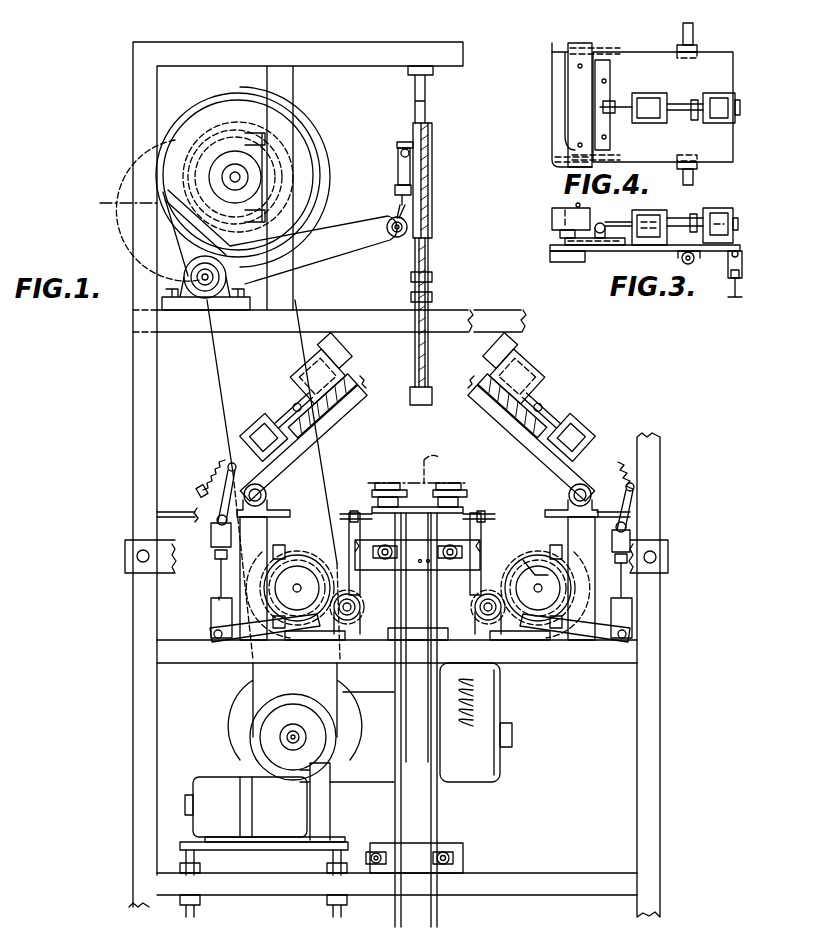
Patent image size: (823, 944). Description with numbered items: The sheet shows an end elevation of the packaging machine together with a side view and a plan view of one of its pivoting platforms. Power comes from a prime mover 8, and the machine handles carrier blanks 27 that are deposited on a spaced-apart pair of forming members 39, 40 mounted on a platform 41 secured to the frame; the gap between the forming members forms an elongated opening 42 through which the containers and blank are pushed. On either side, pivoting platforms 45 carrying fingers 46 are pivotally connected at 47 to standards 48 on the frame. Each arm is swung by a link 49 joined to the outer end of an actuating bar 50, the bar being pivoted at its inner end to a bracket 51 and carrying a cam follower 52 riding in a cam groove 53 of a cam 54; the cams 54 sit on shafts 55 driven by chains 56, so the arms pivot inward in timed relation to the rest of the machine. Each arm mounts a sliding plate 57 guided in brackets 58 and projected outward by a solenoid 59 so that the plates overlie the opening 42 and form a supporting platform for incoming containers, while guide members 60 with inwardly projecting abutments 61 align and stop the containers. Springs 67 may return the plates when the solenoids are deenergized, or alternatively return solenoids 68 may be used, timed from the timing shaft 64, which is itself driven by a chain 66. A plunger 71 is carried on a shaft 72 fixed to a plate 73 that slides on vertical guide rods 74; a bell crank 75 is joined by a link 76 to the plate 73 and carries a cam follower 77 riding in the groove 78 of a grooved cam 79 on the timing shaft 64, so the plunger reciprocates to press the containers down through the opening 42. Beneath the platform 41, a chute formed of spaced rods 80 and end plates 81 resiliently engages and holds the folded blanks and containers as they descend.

In FIG. 1, the prime mover 8 is at (216, 780).
In FIG. 1, the carrier blank 27 is at (434, 462).
In FIG. 1, the forming member 39 is at (372, 488).
In FIG. 1, the forming member 40 is at (472, 484).
In FIG. 1, the platform 41 is at (470, 506).
In FIG. 1, the elongated opening 42 is at (414, 486).
In FIG. 1, the pivoting platform 45 is at (280, 463).
In FIG. 4, the pivoting platform 45 is at (732, 64).
In FIG. 3, the pivoting platform 45 is at (630, 254).
In FIG. 1, the fingers 46 is at (356, 402).
In FIG. 3, the fingers 46 is at (566, 262).
In FIG. 1, the pivotal connection 47 is at (266, 494).
In FIG. 4, the pivotal connection 47 is at (694, 34).
In FIG. 1, the standard 48 is at (262, 528).
In FIG. 1, the link 49 is at (218, 578).
In FIG. 3, the link 49 is at (742, 274).
In FIG. 1, the actuating bar 50 is at (288, 646).
In FIG. 1, the bracket 51 is at (364, 640).
In FIG. 1, the cam follower 52 is at (316, 640).
In FIG. 1, the cam groove 53 is at (285, 534).
In FIG. 1, the cam 54 is at (298, 556).
In FIG. 1, the shaft 55 is at (300, 578).
In FIG. 1, the chain 56 is at (509, 556).
In FIG. 1, the sliding plate 57 is at (365, 378).
In FIG. 4, the sliding plate 57 is at (554, 48).
In FIG. 4, the bracket 58 is at (608, 50).
In FIG. 1, the solenoid 59 is at (264, 422).
In FIG. 4, the solenoid 59 is at (646, 93).
In FIG. 3, the solenoid 59 is at (664, 216).
In FIG. 1, the guide member 60 is at (310, 378).
In FIG. 4, the guide member 60 is at (572, 89).
In FIG. 3, the guide member 60 is at (592, 224).
In FIG. 1, the abutment 61 is at (333, 364).
In FIG. 4, the abutment 61 is at (552, 160).
In FIG. 1, the timing shaft 64 is at (230, 172).
In FIG. 1, the chain 66 is at (214, 362).
In FIG. 1, the spring 67 is at (206, 472).
In FIG. 4, the return solenoid 68 is at (720, 128).
In FIG. 3, the return solenoid 68 is at (732, 210).
In FIG. 1, the plunger 71 is at (414, 405).
In FIG. 1, the shaft 72 is at (430, 302).
In FIG. 1, the plate 73 is at (432, 175).
In FIG. 1, the guide rod 74 is at (428, 96).
In FIG. 1, the bell crank 75 is at (337, 254).
In FIG. 1, the link 76 is at (396, 168).
In FIG. 1, the cam follower 77 is at (186, 270).
In FIG. 1, the groove 78 is at (210, 94).
In FIG. 1, the grooved cam 79 is at (312, 124).
In FIG. 1, the rod 80 is at (395, 800).
In FIG. 1, the end plate 81 is at (410, 710).